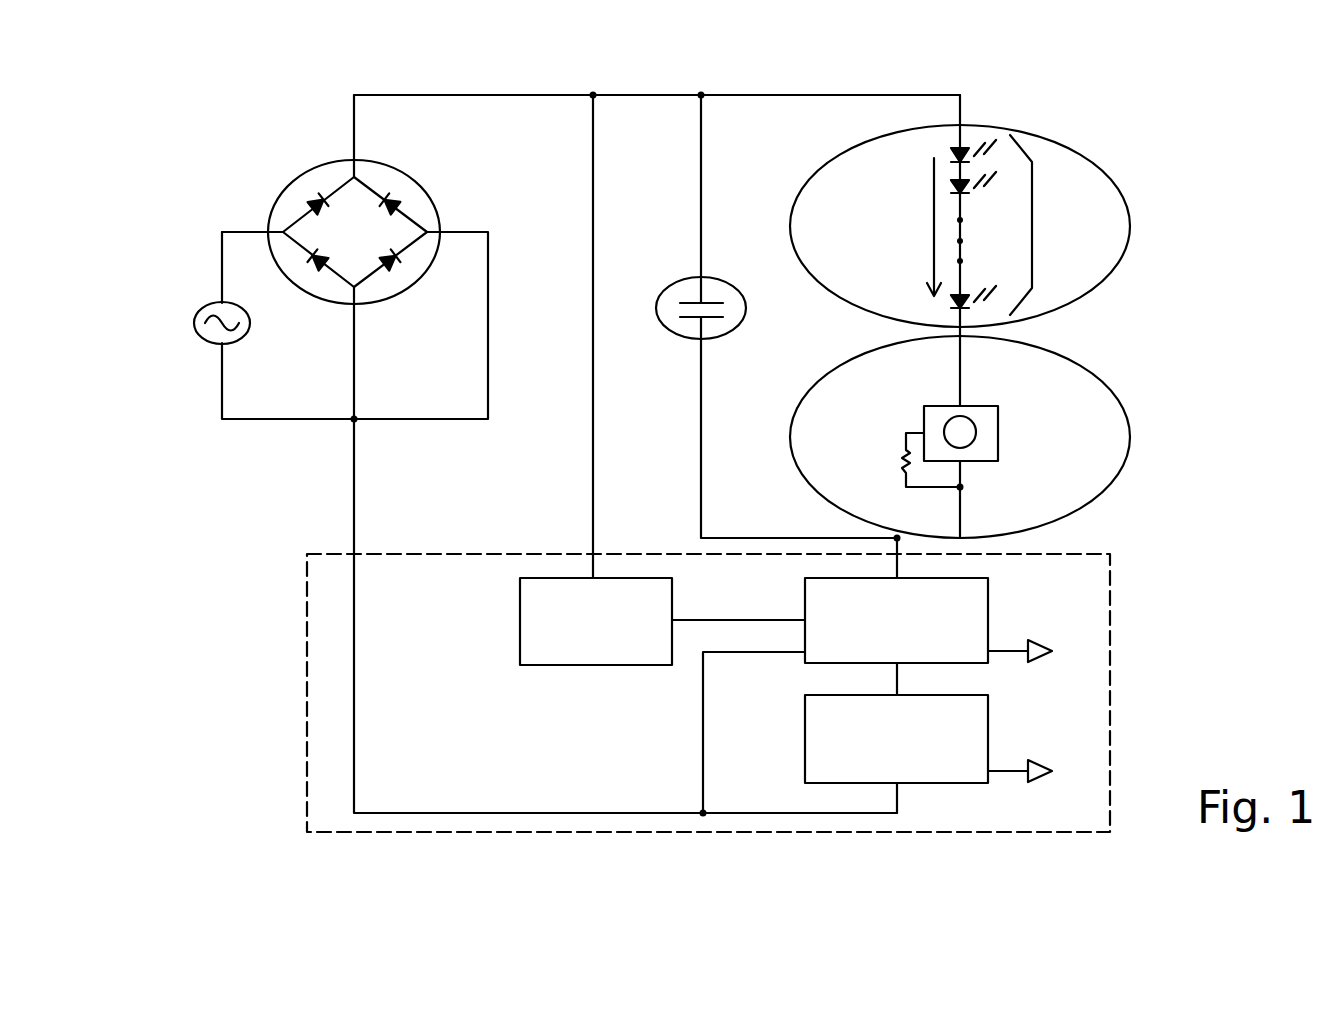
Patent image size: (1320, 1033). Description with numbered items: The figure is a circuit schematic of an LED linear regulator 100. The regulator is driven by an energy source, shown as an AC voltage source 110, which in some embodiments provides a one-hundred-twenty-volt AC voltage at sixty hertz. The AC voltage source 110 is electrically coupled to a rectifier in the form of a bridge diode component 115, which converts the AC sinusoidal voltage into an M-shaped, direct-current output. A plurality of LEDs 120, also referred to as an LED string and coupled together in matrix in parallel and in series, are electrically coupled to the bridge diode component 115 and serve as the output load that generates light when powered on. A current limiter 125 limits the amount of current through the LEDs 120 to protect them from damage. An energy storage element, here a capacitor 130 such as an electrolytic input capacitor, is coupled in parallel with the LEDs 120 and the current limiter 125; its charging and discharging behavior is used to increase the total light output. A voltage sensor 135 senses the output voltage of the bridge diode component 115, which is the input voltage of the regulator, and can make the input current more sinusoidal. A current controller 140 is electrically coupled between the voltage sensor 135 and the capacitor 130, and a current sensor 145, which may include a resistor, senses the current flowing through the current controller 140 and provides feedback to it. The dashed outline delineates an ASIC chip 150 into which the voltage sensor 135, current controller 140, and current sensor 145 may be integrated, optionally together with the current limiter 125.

The LED linear regulator 100 is at (665, 85).
The AC voltage source 110 is at (195, 322).
The bridge diode component 115 is at (282, 187).
The LEDs 120 is at (1086, 146).
The current limiter 125 is at (1004, 433).
The capacitor 130 is at (717, 270).
The voltage sensor 135 is at (520, 618).
The current controller 140 is at (988, 592).
The current sensor 145 is at (988, 710).
The ASIC chip 150 is at (1112, 570).